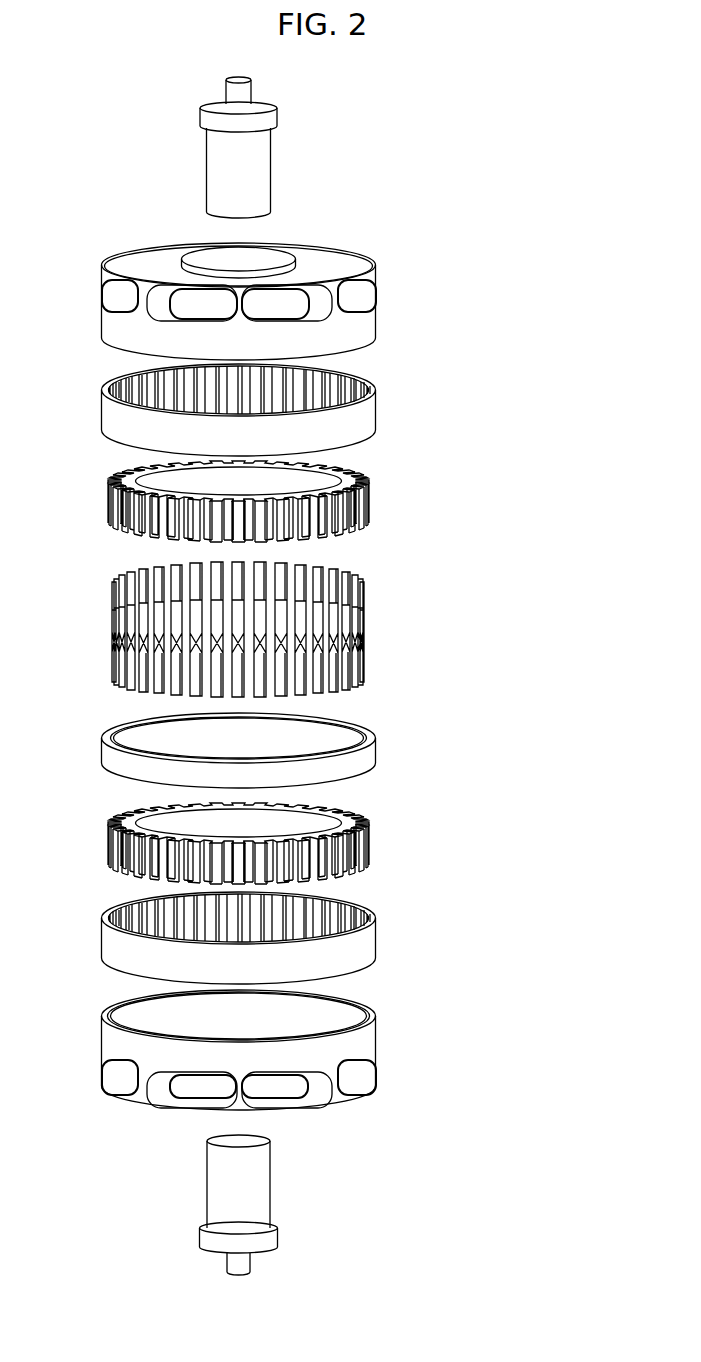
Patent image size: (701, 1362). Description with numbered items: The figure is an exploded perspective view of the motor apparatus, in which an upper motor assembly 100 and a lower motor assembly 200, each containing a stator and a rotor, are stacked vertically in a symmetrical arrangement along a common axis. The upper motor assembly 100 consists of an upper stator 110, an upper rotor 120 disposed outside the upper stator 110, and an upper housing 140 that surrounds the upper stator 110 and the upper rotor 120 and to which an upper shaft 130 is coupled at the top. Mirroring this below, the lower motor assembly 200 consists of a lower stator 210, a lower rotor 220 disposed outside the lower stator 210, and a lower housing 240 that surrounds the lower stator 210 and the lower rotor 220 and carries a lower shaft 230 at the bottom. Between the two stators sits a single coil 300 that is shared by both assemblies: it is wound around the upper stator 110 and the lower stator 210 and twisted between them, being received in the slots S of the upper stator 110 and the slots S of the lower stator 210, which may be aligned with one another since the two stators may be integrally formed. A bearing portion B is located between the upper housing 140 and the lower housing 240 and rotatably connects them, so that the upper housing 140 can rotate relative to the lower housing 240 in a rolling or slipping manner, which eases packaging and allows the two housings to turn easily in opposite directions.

The upper motor assembly 100 is at (344, 309).
The upper shaft 130 is at (262, 187).
The upper housing 140 is at (368, 320).
The upper rotor 120 is at (367, 417).
The upper stator 110 is at (305, 501).
The slots S is at (237, 522).
The coil 300 is at (372, 636).
The bearing portion B is at (367, 757).
The lower motor assembly 200 is at (345, 1039).
The lower stator 210 is at (368, 852).
The lower rotor 220 is at (367, 938).
The lower housing 240 is at (367, 1047).
The lower shaft 230 is at (350, 1205).